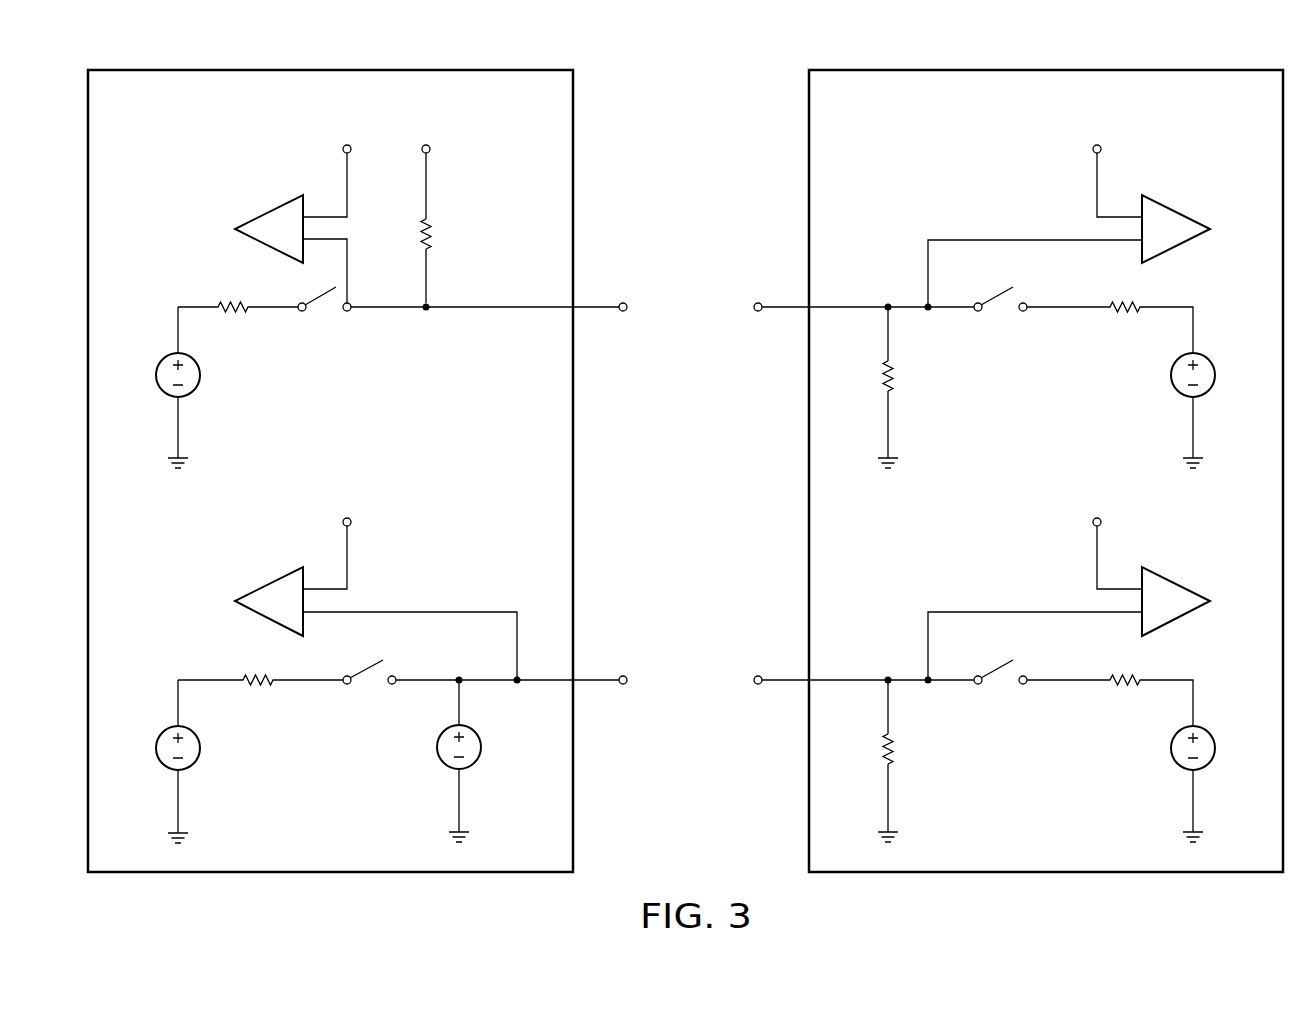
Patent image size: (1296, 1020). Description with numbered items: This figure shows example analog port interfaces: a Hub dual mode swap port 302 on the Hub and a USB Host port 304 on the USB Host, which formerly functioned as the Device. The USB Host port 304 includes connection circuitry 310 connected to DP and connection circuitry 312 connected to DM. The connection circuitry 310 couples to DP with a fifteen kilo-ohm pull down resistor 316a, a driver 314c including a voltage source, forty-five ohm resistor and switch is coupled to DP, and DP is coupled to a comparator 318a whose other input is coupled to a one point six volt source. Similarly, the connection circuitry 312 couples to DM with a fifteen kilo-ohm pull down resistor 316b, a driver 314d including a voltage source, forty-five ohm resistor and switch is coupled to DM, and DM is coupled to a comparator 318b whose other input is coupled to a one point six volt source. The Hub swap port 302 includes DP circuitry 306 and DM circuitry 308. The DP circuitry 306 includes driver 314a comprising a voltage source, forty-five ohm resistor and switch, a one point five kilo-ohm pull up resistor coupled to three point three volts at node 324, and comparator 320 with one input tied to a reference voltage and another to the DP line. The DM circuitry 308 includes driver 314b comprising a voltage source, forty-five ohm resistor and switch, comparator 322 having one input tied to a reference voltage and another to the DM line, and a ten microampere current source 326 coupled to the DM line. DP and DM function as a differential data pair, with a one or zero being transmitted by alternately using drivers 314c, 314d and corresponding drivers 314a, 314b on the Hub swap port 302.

The Hub dual mode swap port 302 is at (174, 64).
The USB Host port 304 is at (1199, 64).
The DP circuitry 306 is at (595, 311).
The DM circuitry 308 is at (595, 684).
The connection circuitry 310 is at (785, 311).
The connection circuitry 312 is at (785, 684).
The driver 314a is at (200, 375).
The driver 314b is at (200, 748).
The driver 314c is at (1171, 375).
The driver 314d is at (1171, 748).
The 15 kΩ pull down resistor 316a is at (895, 378).
The 15 kΩ pull down resistor 316b is at (895, 748).
The comparator 318a is at (1200, 193).
The comparator 318b is at (1200, 565).
The comparator 320 is at (271, 210).
The comparator 322 is at (271, 582).
The DP pull-up node 324 is at (430, 311).
The 10 μA current source 326 is at (481, 747).